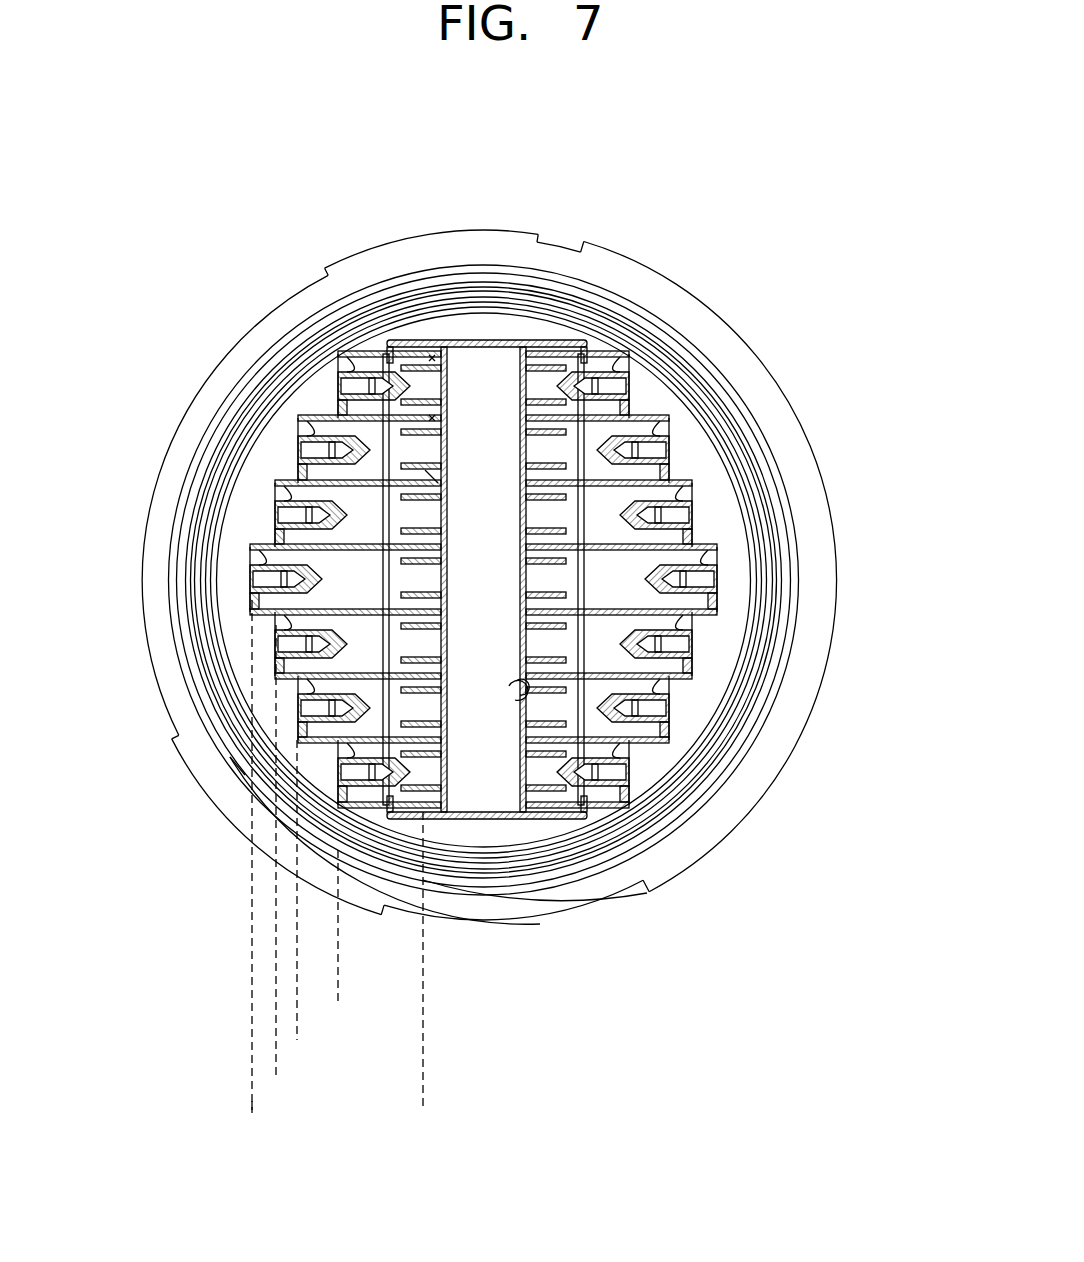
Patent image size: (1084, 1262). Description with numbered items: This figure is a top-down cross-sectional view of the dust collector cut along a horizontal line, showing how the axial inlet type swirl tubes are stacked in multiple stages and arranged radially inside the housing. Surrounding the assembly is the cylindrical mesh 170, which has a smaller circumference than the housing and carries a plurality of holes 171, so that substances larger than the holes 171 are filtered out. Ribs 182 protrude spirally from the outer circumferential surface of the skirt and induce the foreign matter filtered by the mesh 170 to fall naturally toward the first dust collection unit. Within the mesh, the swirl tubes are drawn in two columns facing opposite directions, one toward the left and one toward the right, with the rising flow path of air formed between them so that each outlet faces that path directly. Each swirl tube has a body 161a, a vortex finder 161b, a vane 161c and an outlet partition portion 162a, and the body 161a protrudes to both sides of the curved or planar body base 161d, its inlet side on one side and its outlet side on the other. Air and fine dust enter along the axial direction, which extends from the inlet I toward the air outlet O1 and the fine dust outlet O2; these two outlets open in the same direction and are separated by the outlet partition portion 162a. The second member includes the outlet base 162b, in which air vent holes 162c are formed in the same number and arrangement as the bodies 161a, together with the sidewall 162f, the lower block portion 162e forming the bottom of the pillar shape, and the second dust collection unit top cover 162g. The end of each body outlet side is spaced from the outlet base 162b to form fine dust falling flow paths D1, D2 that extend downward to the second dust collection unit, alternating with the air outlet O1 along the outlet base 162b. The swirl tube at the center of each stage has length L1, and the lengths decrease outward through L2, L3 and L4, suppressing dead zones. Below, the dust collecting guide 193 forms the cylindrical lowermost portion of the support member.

The ribs 182 is at (828, 483).
The mesh 170 is at (763, 647).
The holes 171 is at (757, 677).
The second dust collection unit top cover 162g is at (700, 705).
The body 161a is at (668, 435).
The vortex finder 161b is at (693, 483).
The vane 161c is at (677, 488).
The body base 161d is at (650, 417).
The dust collecting guide 193 is at (273, 445).
The lower block portion 162e is at (477, 357).
The sidewall 162f is at (507, 343).
The fine dust falling flow path D1 is at (432, 355).
The fine dust falling flow path D2 is at (428, 477).
The outlet partition portion 162a is at (547, 680).
The outlet base 162b is at (515, 700).
The air vent hole 162c is at (520, 695).
The air outlet O1 is at (410, 578).
The fine dust outlet O2 is at (413, 602).
The inlet I is at (253, 600).
The length of the axial inlet type swirl tube at the center L1 is at (423, 1113).
The length of axial inlet type swirl tube L2 is at (423, 1077).
The length of axial inlet type swirl tube L3 is at (423, 1042).
The length of axial inlet type swirl tube L4 is at (423, 1006).